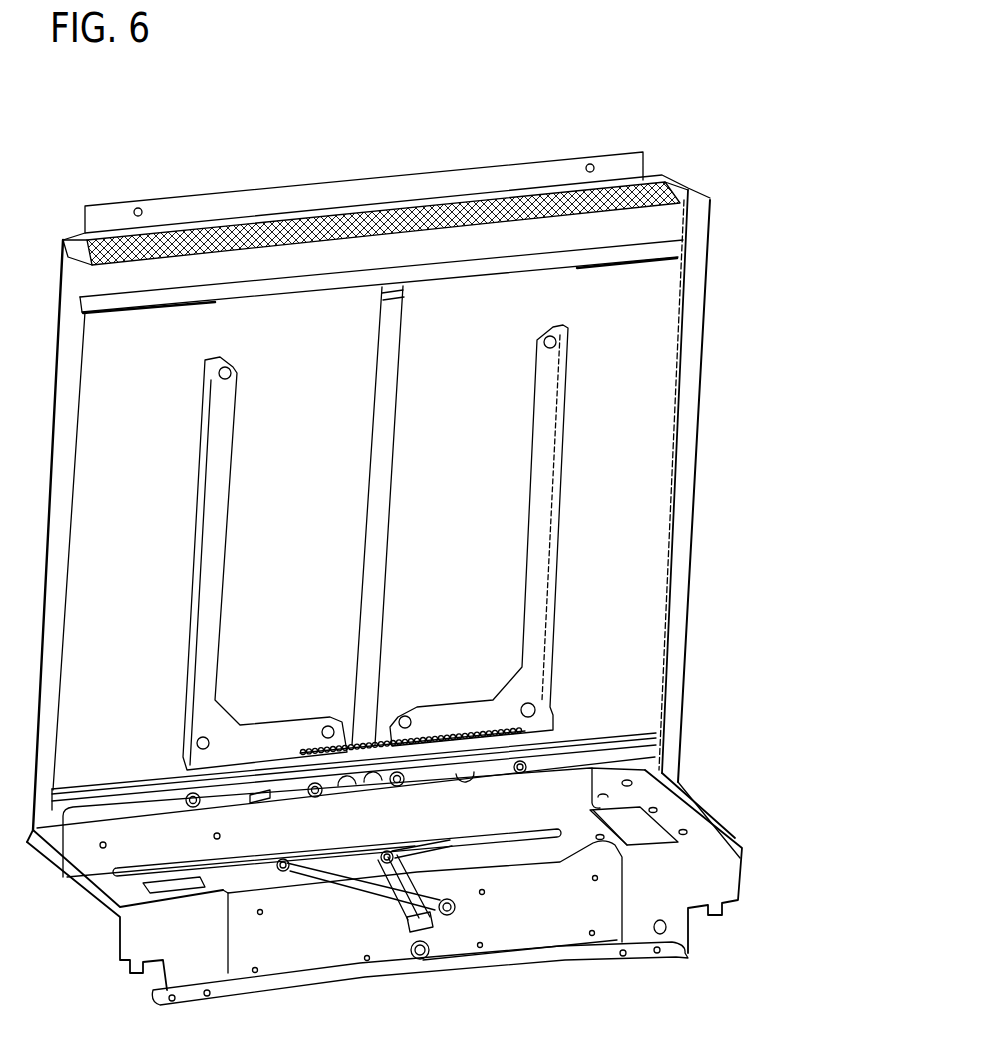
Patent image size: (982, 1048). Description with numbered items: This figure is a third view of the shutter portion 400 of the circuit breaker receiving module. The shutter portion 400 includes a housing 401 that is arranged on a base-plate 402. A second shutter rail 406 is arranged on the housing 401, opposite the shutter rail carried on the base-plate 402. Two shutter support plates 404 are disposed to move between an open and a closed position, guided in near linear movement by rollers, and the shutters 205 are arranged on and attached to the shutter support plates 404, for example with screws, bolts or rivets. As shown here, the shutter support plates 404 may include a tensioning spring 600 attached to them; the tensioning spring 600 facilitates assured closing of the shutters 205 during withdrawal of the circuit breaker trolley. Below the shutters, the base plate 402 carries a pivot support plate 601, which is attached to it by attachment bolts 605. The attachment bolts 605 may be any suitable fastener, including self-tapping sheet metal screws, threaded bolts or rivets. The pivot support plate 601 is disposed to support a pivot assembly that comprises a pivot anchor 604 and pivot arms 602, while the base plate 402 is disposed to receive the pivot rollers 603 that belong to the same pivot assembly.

The shutter portion 400 is at (552, 118).
The housing 401 is at (646, 432).
The base-plate 402 is at (556, 811).
The shutter support plates 404 is at (263, 756).
The second shutter rail 406 is at (648, 245).
The shutters 205 is at (321, 501).
The tensioning spring 600 is at (427, 735).
The pivot support plate 601 is at (567, 912).
The pivot arms 602 is at (447, 843).
The pivot rollers 603 is at (286, 858).
The pivot anchor 604 is at (428, 957).
The attachment bolts 605 is at (255, 972).